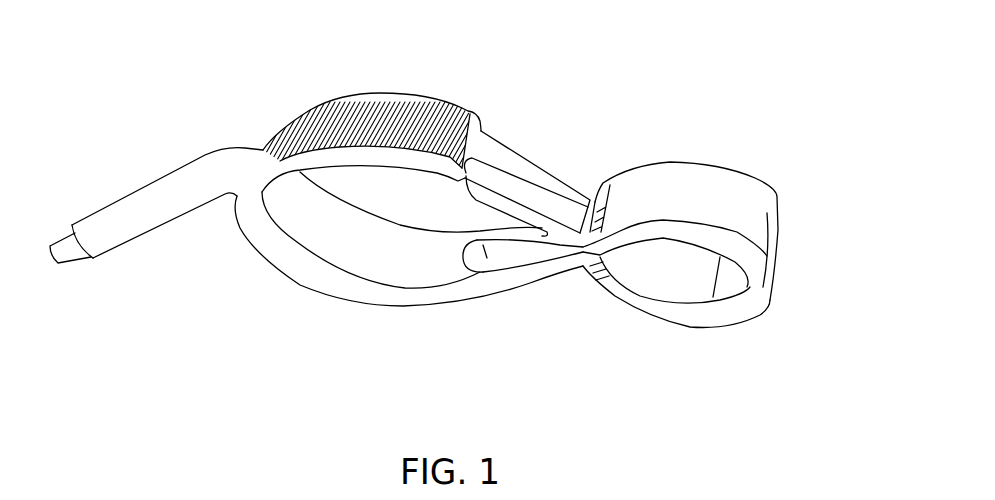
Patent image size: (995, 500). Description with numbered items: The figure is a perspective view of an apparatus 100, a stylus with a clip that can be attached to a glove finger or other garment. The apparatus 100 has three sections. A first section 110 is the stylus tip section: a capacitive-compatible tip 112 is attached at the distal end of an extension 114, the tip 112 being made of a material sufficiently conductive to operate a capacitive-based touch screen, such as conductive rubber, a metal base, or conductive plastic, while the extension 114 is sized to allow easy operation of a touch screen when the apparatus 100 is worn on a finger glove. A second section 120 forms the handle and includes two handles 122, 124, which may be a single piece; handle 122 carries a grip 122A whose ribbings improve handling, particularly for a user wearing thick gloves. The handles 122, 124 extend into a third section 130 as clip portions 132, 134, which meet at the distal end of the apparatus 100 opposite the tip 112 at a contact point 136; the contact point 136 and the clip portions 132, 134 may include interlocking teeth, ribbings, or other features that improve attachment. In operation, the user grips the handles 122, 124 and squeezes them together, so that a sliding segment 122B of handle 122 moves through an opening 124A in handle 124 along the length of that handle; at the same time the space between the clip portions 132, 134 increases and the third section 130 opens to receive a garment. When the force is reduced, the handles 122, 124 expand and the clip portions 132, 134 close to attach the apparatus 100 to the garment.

The apparatus 100 is at (668, 71).
The first section 110 is at (48, 273).
The capacitive-compatible tip 112 is at (63, 247).
The extension 114 is at (157, 187).
The second section 120 is at (247, 350).
The handle 122 is at (415, 144).
The grip 122A is at (383, 99).
The sliding segment 122B is at (470, 188).
The handle 124 is at (462, 298).
The opening 124A is at (484, 270).
The third section 130 is at (570, 335).
The clip portion 132 is at (727, 183).
The clip portion 134 is at (753, 317).
The contact point 136 is at (808, 249).